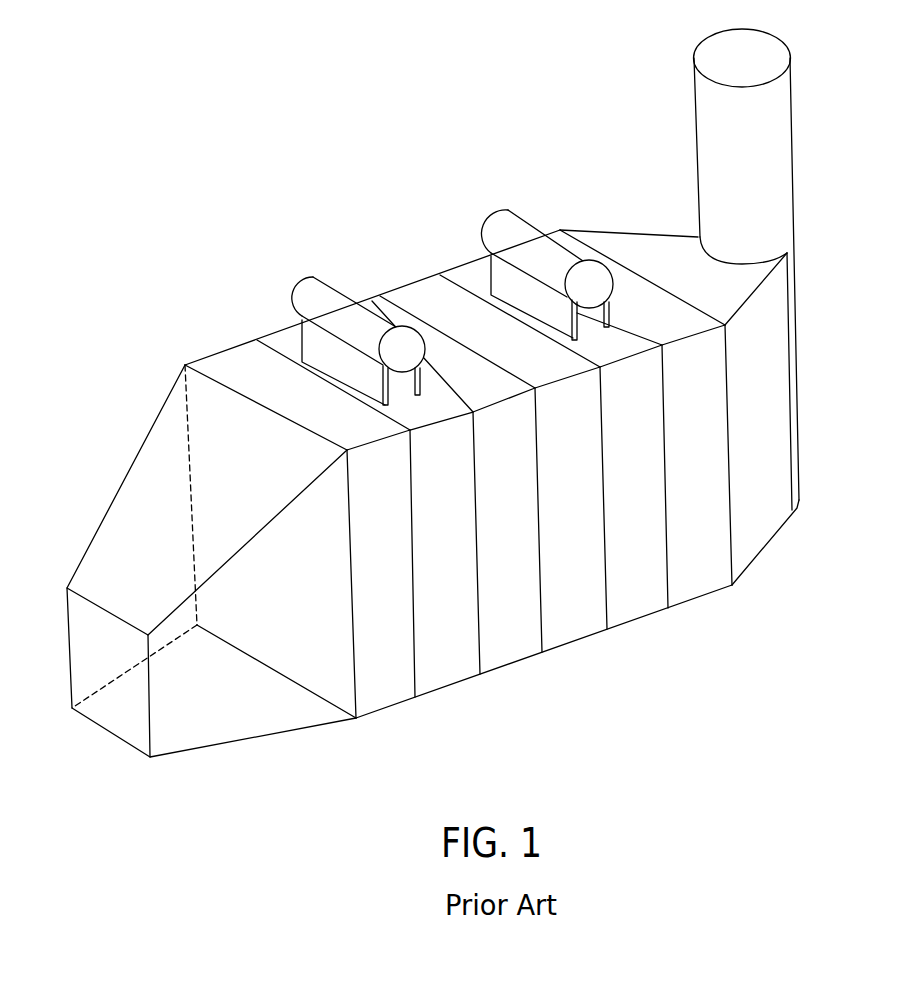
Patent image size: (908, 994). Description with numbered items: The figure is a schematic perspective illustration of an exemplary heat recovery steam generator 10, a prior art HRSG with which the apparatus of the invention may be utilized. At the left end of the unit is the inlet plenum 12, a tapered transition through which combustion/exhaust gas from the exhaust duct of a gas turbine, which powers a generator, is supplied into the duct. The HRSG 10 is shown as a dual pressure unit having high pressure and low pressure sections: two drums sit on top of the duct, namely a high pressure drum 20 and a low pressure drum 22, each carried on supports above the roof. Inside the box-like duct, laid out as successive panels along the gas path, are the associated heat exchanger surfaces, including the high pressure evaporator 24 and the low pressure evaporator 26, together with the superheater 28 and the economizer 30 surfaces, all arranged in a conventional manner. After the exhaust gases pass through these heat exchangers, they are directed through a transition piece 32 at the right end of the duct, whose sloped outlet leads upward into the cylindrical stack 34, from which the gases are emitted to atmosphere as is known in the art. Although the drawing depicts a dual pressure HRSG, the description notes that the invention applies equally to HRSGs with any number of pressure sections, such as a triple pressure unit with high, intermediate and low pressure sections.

The heat recovery steam generator 10 is at (314, 178).
The inlet plenum 12 is at (122, 529).
The high pressure drum 20 is at (321, 277).
The low pressure drum 22 is at (503, 225).
The high pressure evaporator 24 is at (457, 673).
The low pressure evaporator 26 is at (630, 607).
The superheater 28 is at (226, 360).
The economizer 30 is at (695, 577).
The transition piece 32 is at (757, 535).
The stack 34 is at (790, 90).